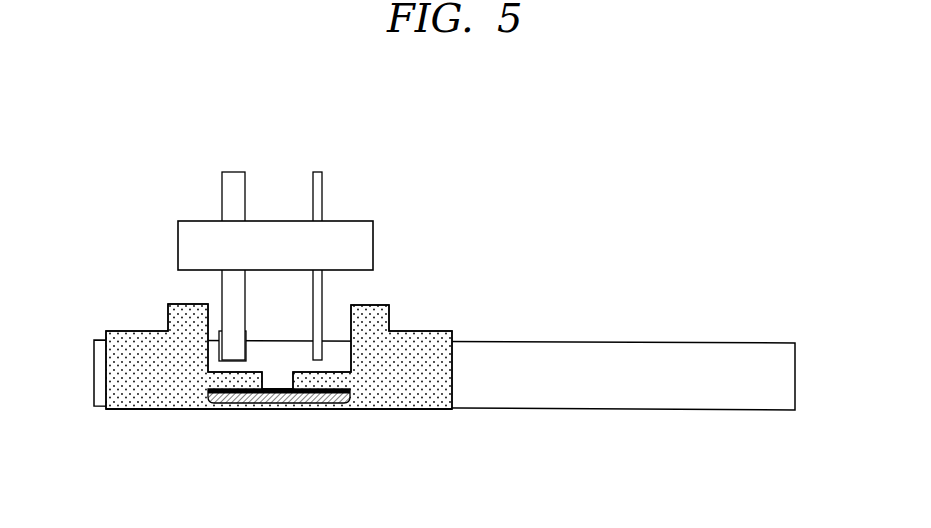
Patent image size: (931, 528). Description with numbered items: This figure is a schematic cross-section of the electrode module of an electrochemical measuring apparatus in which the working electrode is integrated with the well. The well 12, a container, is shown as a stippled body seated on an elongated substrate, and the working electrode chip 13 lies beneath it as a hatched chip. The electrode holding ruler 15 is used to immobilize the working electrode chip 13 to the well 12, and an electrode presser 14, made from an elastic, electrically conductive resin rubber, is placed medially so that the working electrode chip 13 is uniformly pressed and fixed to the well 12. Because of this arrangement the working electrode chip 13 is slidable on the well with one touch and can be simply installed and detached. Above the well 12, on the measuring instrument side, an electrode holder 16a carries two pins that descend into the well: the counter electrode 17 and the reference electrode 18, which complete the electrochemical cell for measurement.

The well 12 is at (389, 322).
The working electrode chip 13 is at (352, 392).
The electrode presser 14 is at (348, 410).
The electrode holding ruler 15 is at (143, 330).
The electrode holder 16a is at (373, 247).
The counter electrode 17 is at (322, 186).
The reference electrode 18 is at (221, 182).